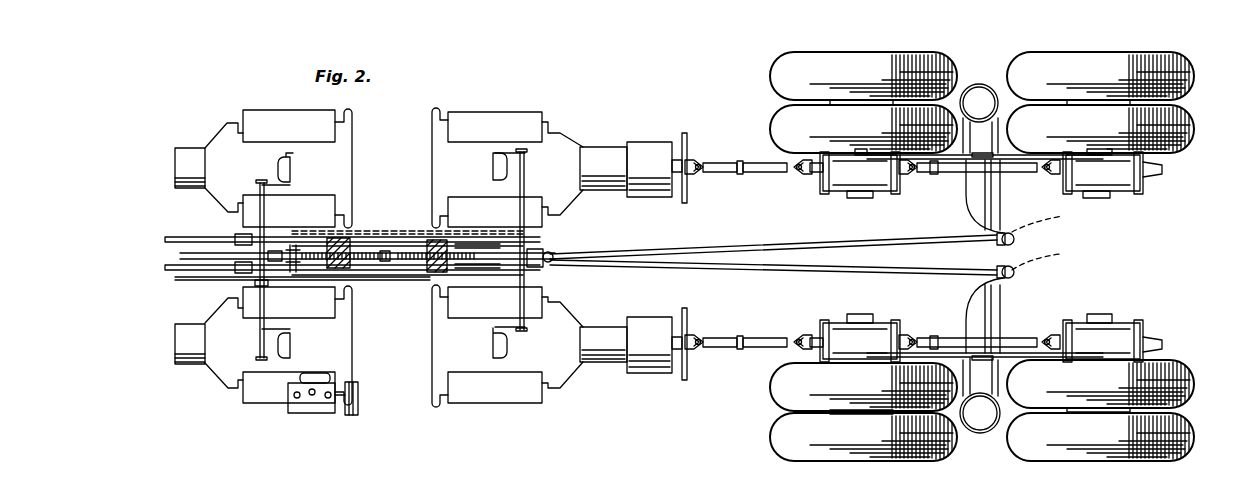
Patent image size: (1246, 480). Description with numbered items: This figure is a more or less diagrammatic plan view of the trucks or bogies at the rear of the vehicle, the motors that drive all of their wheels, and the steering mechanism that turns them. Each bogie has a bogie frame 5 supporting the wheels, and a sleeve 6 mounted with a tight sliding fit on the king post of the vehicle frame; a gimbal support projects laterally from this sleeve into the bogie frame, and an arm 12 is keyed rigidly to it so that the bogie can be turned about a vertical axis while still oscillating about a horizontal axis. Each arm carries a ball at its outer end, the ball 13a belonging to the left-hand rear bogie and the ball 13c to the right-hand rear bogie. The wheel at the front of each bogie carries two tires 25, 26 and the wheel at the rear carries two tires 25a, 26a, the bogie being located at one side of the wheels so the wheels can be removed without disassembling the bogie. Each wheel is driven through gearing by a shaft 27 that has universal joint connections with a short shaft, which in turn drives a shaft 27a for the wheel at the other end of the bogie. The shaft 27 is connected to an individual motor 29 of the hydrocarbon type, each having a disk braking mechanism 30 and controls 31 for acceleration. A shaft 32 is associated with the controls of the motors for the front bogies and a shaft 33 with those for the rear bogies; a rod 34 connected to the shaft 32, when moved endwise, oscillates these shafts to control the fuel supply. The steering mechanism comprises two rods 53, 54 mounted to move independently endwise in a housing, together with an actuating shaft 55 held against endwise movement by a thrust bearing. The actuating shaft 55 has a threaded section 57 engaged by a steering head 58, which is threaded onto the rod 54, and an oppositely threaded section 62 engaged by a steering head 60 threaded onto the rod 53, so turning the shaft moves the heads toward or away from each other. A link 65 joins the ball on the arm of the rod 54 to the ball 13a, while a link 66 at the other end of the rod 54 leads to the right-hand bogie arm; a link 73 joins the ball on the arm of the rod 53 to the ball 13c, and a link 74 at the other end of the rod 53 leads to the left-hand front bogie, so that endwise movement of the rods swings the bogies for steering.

The bogie frame 5 is at (1023, 176).
The sleeve 6 is at (973, 92).
The arm 12 is at (964, 206).
The ball 13a is at (1042, 259).
The ball 13c is at (1044, 219).
The tire 25 is at (777, 62).
The tire 25a is at (1012, 60).
The tire 26 is at (777, 114).
The tire 26a is at (1188, 376).
The shaft 27 is at (725, 173).
The shaft 27a is at (1031, 176).
The motor 29 is at (343, 173).
The disk braking mechanism 30 is at (690, 160).
The controls 31 is at (292, 167).
The shaft 32 is at (259, 339).
The shaft 33 is at (518, 305).
The rod 34 is at (200, 282).
The rod 53 is at (443, 282).
The rod 54 is at (473, 240).
The actuating shaft 55 is at (385, 240).
The threaded section 57 is at (372, 250).
The steering head 58 is at (345, 236).
The steering head 60 is at (422, 278).
The threaded section 62 is at (404, 250).
The link 65 is at (851, 275).
The link 66 is at (194, 240).
The link 73 is at (788, 250).
The link 74 is at (180, 264).